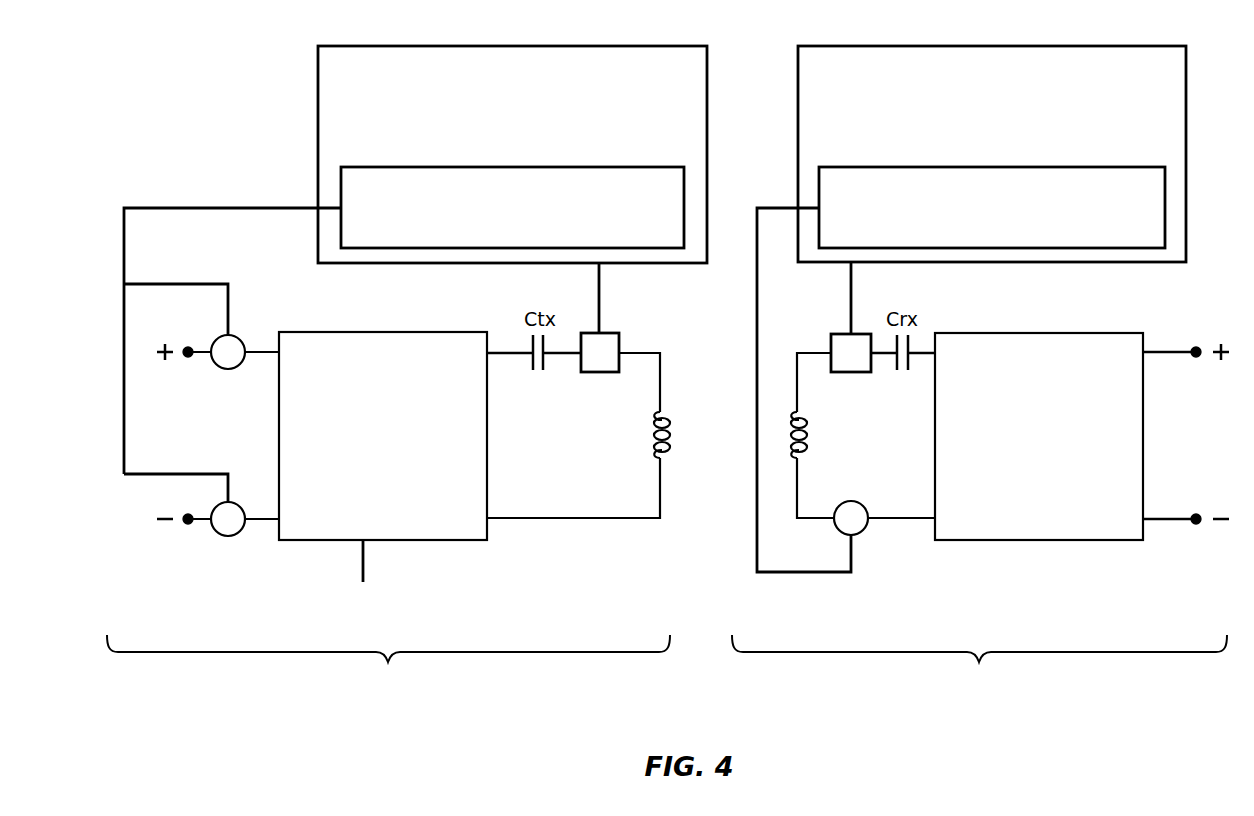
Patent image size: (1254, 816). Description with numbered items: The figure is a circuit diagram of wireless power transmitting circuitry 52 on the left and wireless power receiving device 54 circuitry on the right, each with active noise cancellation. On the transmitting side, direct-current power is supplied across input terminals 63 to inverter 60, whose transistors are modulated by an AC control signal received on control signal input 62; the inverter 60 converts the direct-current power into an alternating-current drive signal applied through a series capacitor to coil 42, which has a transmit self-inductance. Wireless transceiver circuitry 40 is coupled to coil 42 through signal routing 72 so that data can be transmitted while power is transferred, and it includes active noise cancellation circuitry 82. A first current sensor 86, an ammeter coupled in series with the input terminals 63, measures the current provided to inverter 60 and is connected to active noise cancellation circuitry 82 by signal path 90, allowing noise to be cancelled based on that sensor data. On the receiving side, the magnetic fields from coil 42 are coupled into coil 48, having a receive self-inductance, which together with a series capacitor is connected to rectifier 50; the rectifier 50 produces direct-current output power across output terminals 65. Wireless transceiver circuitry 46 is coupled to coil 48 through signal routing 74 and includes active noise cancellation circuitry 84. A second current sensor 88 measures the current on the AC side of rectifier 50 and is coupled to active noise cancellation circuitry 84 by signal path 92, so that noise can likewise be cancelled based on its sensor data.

The wireless transceiver circuitry 40 is at (318, 82).
The active noise cancellation circuitry 82 is at (648, 167).
The signal path 90 is at (170, 208).
The direct-current power supply input terminals 63 is at (188, 347).
The first current sensor 86 is at (228, 370).
The inverter 60 is at (302, 541).
The control signal input 62 is at (363, 560).
The signal routing 72 is at (606, 333).
The coil 42 is at (646, 438).
The wireless power transmitting circuitry 52 is at (388, 662).
The wireless transceiver circuitry 46 is at (798, 84).
The active noise cancellation circuitry 84 is at (1135, 167).
The signal path 92 is at (775, 208).
The signal routing 74 is at (842, 334).
The coil 48 is at (814, 437).
The second current sensor 88 is at (866, 498).
The rectifier 50 is at (1045, 541).
The output terminals 65 is at (1196, 358).
The wireless power receiving device 54 is at (979, 662).